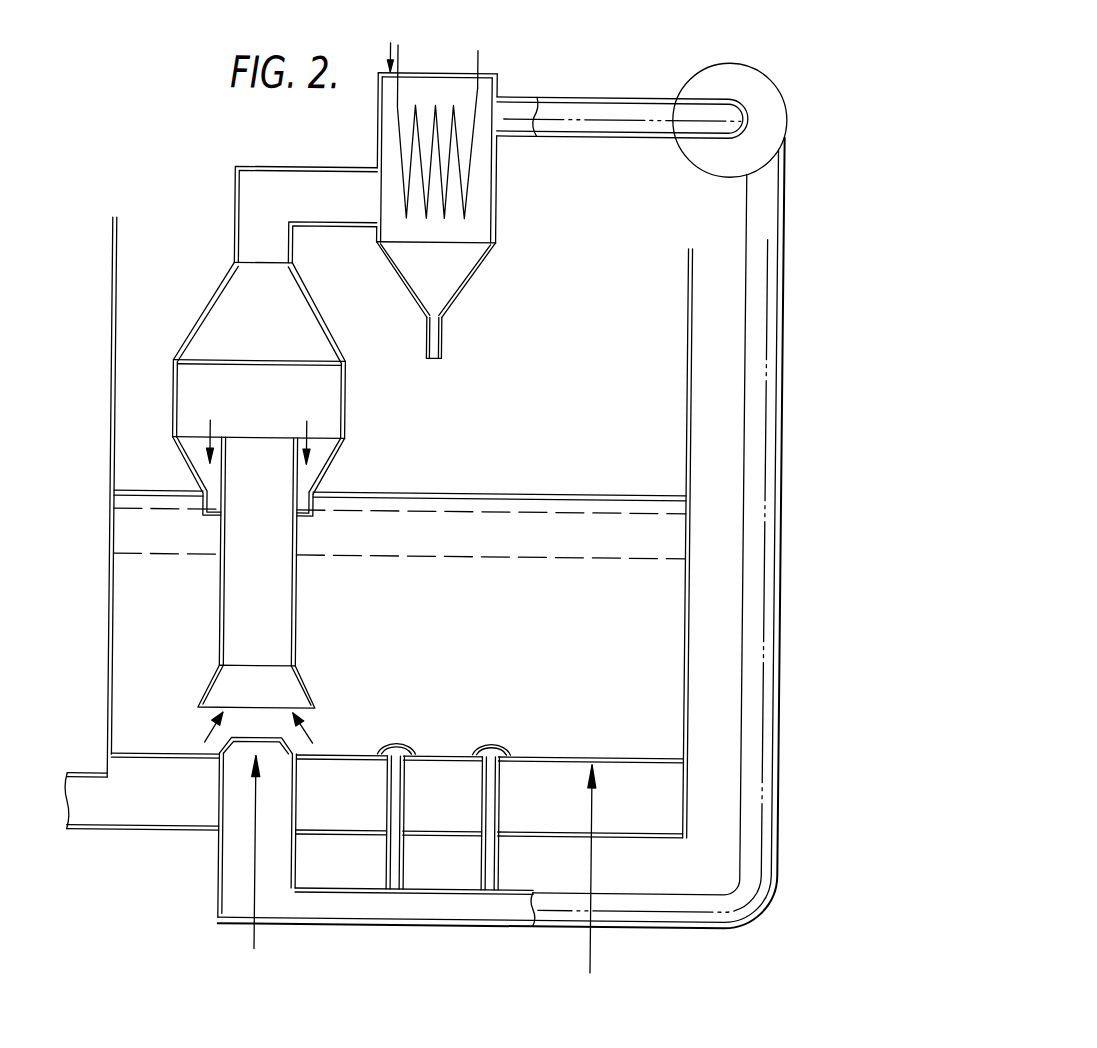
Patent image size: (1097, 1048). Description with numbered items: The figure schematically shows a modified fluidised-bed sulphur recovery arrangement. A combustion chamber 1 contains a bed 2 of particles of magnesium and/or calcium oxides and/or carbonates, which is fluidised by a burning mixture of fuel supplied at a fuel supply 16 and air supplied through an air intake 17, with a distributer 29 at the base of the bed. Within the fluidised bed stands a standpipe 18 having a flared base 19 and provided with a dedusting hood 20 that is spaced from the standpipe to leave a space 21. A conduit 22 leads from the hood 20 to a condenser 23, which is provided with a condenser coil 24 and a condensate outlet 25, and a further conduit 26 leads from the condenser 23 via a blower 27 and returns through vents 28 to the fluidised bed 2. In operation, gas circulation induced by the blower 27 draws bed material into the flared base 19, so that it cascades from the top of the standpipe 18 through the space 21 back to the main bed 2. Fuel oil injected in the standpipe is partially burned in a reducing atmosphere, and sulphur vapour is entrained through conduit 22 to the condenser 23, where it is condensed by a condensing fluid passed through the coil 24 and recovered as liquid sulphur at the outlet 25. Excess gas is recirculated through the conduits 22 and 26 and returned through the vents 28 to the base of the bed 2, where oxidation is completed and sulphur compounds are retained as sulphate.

The combustion chamber 1 is at (687, 537).
The bed 2 is at (666, 411).
The fuel supply 16 is at (256, 844).
The air intake 17 is at (163, 806).
The standpipe 18 is at (298, 605).
The flared base 19 is at (309, 694).
The dedusting hood 20 is at (341, 426).
The space 21 is at (303, 512).
The conduit 22 is at (293, 191).
The condenser 23 is at (472, 202).
The condenser coil 24 is at (481, 77).
The condensate outlet 25 is at (431, 342).
The conduit 26 is at (599, 106).
The blower 27 is at (721, 87).
The vents 28 is at (492, 886).
The distributer 29 is at (557, 762).